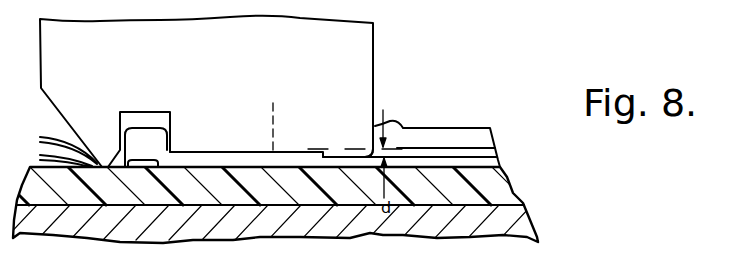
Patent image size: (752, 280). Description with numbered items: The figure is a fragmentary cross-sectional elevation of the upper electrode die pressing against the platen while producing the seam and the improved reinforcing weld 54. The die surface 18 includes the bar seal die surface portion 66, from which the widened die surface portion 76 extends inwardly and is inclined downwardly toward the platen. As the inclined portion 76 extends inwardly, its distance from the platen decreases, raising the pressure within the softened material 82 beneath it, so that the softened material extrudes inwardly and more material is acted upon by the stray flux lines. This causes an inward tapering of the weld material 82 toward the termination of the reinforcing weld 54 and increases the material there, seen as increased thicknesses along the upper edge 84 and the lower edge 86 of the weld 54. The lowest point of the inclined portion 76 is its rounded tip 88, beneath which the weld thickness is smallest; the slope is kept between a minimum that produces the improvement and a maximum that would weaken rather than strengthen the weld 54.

The die surface 18 is at (229, 140).
The bar seal die surface portion 66 is at (195, 152).
The softened material 82 is at (294, 152).
The widened die surface portion 76 is at (353, 152).
The upper edge of the reinforcing weld 84 is at (395, 119).
The lower edge of the reinforcing weld 86 is at (388, 164).
The reinforcing weld 54 is at (323, 158).
The rounded tip 88 is at (368, 158).